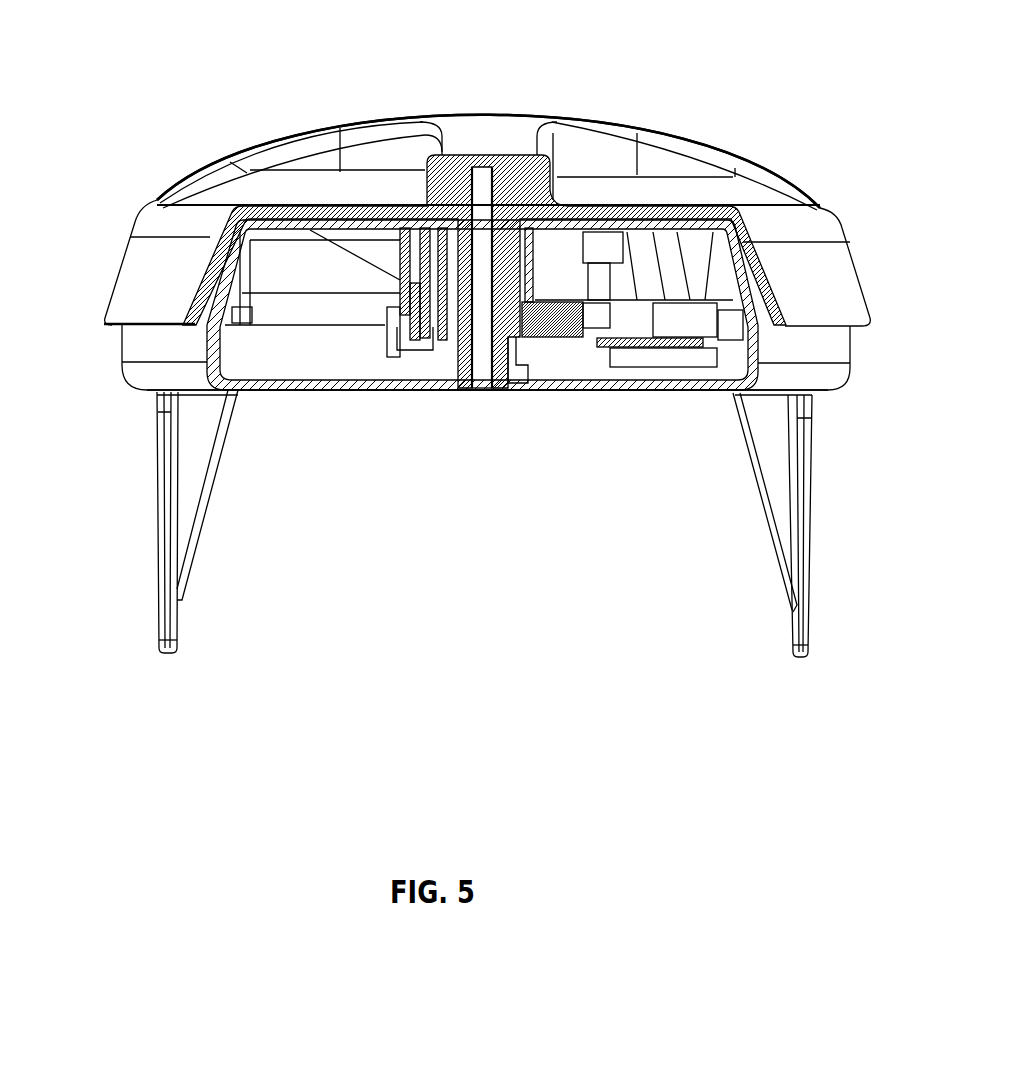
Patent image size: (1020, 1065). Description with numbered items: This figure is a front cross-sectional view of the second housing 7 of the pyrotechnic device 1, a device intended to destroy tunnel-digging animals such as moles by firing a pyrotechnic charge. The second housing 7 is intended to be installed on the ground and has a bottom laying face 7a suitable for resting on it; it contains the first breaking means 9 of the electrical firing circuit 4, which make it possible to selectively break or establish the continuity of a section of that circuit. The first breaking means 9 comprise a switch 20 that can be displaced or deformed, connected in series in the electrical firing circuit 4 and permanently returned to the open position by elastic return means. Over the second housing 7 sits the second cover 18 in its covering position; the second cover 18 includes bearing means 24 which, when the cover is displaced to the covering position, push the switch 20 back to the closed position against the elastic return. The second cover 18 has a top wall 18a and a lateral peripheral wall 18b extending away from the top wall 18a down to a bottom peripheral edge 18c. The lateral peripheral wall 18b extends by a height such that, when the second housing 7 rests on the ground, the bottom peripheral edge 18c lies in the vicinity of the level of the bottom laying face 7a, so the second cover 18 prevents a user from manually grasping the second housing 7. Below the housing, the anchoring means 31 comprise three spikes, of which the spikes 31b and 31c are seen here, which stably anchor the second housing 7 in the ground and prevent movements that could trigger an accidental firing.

The pyrotechnic device 1 is at (364, 93).
The second cover 18 is at (664, 110).
The top wall 18a is at (490, 120).
The lateral peripheral wall 18b is at (116, 298).
The bottom peripheral edge 18c is at (108, 325).
The switch 20 is at (515, 157).
The second housing 7 is at (353, 397).
The bottom laying face 7a is at (294, 390).
The first breaking means 9 is at (541, 341).
The bearing means 24 is at (512, 386).
The electrical firing circuit 4 is at (681, 349).
The anchoring means 31 is at (212, 542).
The spike 31b is at (800, 630).
The spike 31c is at (165, 607).